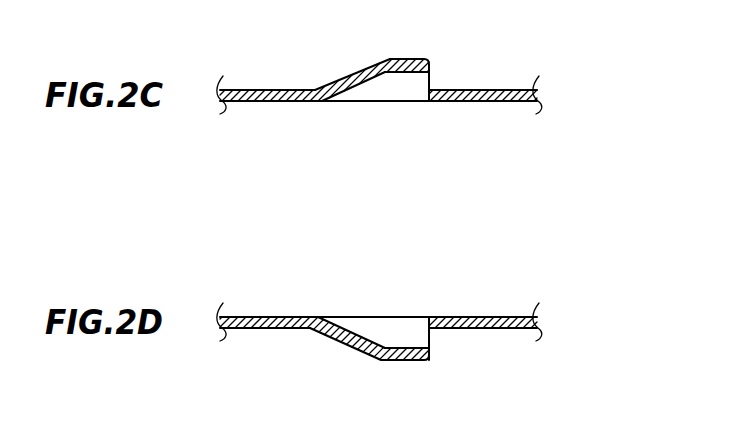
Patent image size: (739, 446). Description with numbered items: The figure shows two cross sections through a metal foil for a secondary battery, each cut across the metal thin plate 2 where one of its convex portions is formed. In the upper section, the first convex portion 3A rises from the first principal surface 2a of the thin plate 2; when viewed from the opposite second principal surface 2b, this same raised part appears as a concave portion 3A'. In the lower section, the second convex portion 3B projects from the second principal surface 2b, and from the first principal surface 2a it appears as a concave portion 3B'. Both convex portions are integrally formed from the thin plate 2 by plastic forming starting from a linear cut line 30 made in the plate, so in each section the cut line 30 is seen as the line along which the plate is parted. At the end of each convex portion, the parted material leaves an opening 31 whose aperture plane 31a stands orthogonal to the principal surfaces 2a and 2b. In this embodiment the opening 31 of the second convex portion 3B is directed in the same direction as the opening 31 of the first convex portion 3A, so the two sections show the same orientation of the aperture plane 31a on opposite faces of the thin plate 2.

In FIG. 2C, the metal thin plate 2 is at (523, 82).
In FIG. 2D, the metal thin plate 2 is at (522, 302).
In FIG. 2C, the first principal surface 2a is at (259, 89).
In FIG. 2D, the first principal surface 2a is at (260, 317).
In FIG. 2C, the second principal surface 2b is at (260, 101).
In FIG. 2D, the second principal surface 2b is at (260, 328).
In FIG. 2C, the first convex portion 3A is at (379, 48).
In FIG. 2C, the concave portion 3A' is at (360, 120).
In FIG. 2D, the second convex portion 3B is at (507, 377).
In FIG. 2D, the concave portion 3B' is at (350, 301).
In FIG. 2C, the cut line 30 is at (430, 101).
In FIG. 2D, the cut line 30 is at (427, 316).
In FIG. 2C, the opening 31 is at (422, 88).
In FIG. 2D, the opening 31 is at (418, 333).
In FIG. 2C, the aperture plane 31a is at (430, 79).
In FIG. 2D, the aperture plane 31a is at (429, 333).